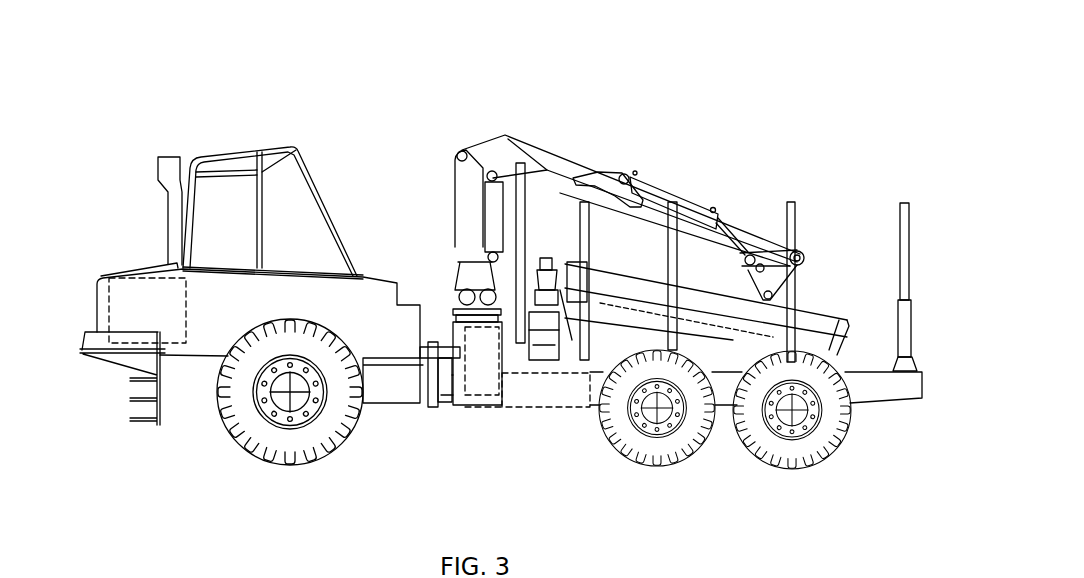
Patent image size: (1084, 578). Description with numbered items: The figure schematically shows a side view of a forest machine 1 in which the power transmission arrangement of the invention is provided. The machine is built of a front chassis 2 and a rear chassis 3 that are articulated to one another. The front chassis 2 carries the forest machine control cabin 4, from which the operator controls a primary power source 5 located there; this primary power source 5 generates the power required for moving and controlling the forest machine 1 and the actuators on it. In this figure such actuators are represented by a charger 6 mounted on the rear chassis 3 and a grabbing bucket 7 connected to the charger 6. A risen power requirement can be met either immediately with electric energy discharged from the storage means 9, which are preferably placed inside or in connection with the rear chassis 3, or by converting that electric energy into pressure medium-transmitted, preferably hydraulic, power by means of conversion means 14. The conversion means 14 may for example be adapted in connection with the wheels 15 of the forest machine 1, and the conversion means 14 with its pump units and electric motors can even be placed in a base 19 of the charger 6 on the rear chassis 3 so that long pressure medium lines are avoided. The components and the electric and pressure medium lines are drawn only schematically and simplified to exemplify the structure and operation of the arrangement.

The forest machine 1 is at (428, 128).
The front chassis 2 is at (187, 370).
The rear chassis 3 is at (887, 385).
The forest machine control cabin 4 is at (310, 185).
The primary power source 5 is at (128, 293).
The charger 6 is at (557, 158).
The grabbing bucket 7 is at (562, 378).
The storage means 9 is at (530, 388).
The conversion means 14 is at (480, 372).
The wheels 15 is at (355, 415).
The base 19 is at (457, 340).